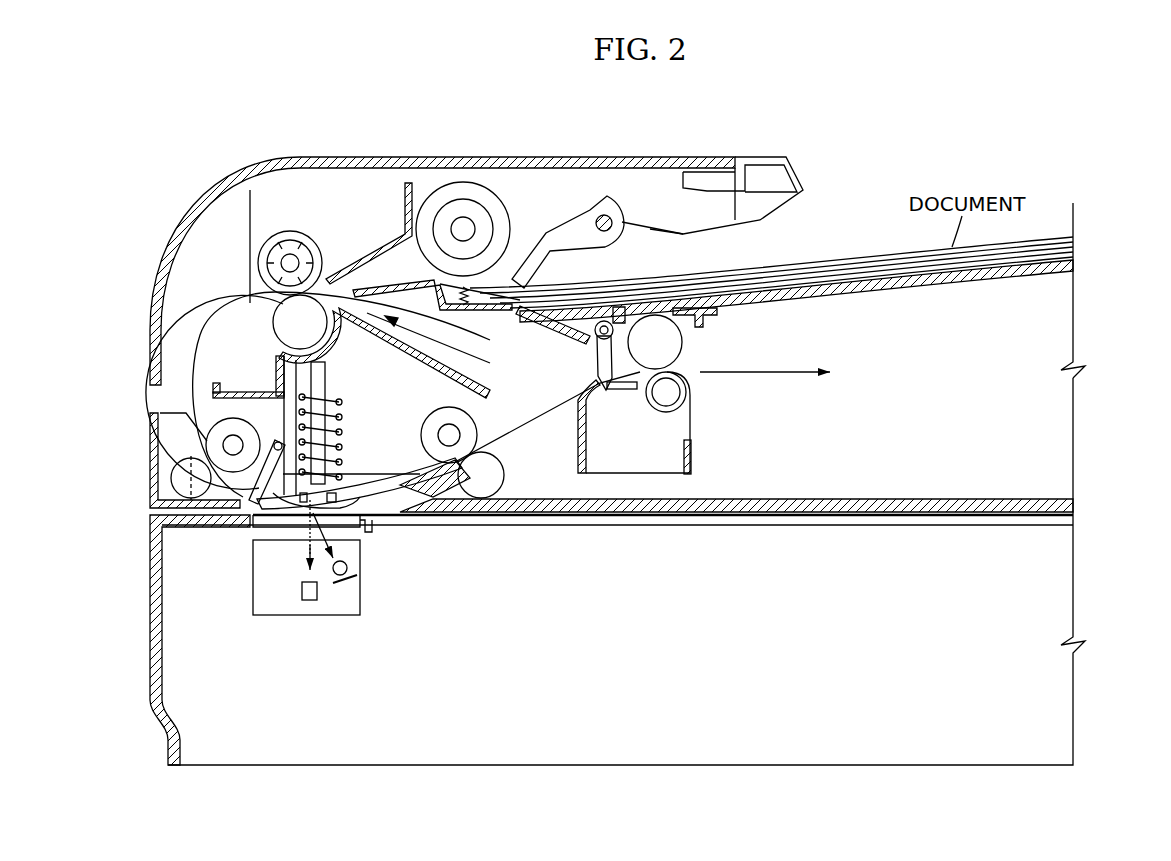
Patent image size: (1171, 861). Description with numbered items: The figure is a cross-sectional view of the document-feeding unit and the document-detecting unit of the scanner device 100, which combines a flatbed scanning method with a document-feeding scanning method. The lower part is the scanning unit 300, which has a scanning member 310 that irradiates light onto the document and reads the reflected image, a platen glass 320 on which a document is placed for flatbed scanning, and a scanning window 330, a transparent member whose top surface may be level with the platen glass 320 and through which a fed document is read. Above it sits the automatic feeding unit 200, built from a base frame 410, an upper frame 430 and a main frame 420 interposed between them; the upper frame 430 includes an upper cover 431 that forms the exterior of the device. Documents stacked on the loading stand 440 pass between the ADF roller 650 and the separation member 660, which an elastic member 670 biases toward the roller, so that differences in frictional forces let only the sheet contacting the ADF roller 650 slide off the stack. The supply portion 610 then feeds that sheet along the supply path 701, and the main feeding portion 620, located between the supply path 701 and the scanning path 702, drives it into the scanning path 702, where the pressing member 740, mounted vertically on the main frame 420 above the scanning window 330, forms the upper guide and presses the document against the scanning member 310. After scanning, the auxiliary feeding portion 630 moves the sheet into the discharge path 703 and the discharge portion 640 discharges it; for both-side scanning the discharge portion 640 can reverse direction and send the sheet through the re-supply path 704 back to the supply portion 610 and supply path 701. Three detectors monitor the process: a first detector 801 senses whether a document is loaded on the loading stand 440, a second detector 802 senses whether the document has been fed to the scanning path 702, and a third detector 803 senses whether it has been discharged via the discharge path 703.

The scanner device 100 is at (1053, 153).
The automatic feeding unit 200 is at (1055, 322).
The scanning unit 300 is at (1052, 576).
The scanning member 310 is at (332, 617).
The platen glass 320 is at (825, 524).
The scanning window 330 is at (345, 528).
The base frame 410 is at (145, 494).
The main frame 420 is at (695, 460).
The upper frame 430 is at (183, 212).
The upper cover 431 is at (348, 155).
The loading stand 440 is at (927, 286).
The supply portion 610 is at (322, 240).
The main feeding portion 620 is at (168, 466).
The auxiliary feeding portion 630 is at (490, 500).
The discharge portion 640 is at (686, 343).
The ADF roller 650 is at (470, 184).
The separation member 660 is at (505, 311).
The elastic member 670 is at (470, 306).
The supply path 701 is at (182, 398).
The scanning path 702 is at (256, 526).
The discharge path 703 is at (621, 390).
The re-supply path 704 is at (436, 342).
The pressing member 740 is at (403, 517).
The first detector 801 is at (628, 198).
The second detector 802 is at (300, 440).
The third detector 803 is at (620, 318).